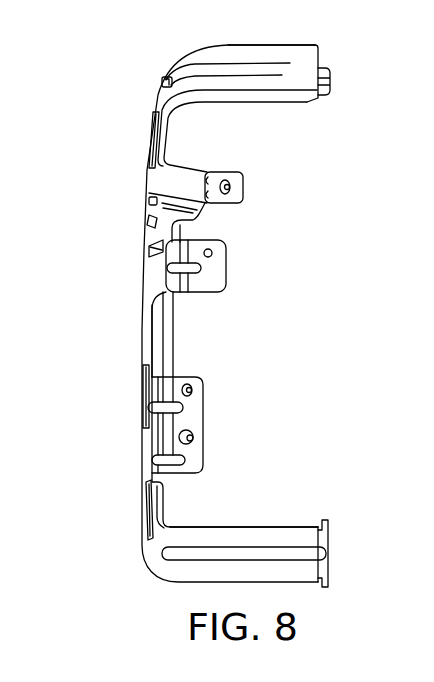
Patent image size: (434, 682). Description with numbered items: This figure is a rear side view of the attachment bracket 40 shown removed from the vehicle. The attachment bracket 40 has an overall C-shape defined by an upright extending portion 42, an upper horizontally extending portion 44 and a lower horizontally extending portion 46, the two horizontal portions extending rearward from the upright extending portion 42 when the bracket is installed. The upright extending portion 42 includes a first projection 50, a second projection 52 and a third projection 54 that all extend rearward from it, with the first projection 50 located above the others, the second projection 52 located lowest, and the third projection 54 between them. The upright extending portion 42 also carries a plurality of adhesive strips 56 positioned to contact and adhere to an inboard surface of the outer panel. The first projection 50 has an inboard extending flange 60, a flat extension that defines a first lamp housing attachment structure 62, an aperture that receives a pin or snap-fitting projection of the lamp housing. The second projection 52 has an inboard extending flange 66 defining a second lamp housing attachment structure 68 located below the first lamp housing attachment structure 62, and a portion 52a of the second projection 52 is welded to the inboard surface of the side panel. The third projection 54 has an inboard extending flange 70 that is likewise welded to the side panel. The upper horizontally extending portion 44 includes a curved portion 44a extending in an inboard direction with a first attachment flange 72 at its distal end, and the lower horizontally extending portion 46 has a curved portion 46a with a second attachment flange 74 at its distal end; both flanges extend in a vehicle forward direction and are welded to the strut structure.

The attachment bracket 40 is at (156, 41).
The upright extending portion 42 is at (148, 320).
The upper horizontally extending portion 44 is at (299, 66).
The curved portion 44a is at (228, 45).
The lower horizontally extending portion 46 is at (273, 540).
The curved portion 46a is at (228, 527).
The first projection 50 is at (183, 180).
The second projection 52 is at (168, 383).
The portion of the second projection 52a is at (187, 387).
The third projection 54 is at (205, 282).
The adhesive strips 56 is at (163, 82).
The inboard extending flange 60 is at (235, 203).
The first lamp housing attachment structure 62 is at (230, 182).
The inboard extending flange 66 is at (195, 415).
The second lamp housing attachment structure 68 is at (195, 445).
The inboard extending flange 70 is at (213, 267).
The first attachment flange 72 is at (329, 78).
The second attachment flange 74 is at (329, 530).